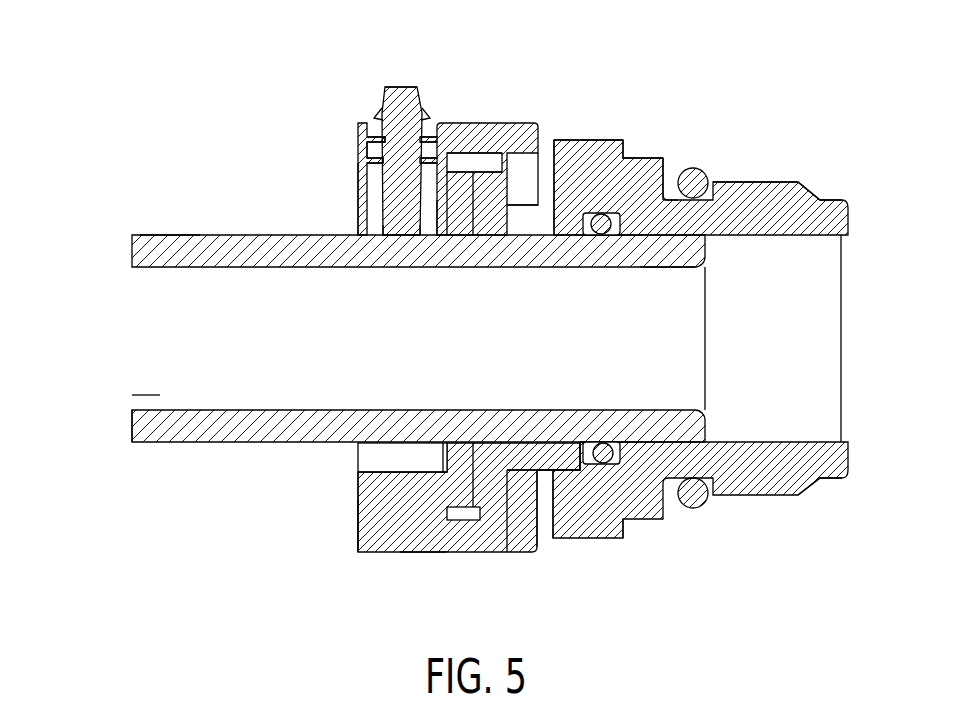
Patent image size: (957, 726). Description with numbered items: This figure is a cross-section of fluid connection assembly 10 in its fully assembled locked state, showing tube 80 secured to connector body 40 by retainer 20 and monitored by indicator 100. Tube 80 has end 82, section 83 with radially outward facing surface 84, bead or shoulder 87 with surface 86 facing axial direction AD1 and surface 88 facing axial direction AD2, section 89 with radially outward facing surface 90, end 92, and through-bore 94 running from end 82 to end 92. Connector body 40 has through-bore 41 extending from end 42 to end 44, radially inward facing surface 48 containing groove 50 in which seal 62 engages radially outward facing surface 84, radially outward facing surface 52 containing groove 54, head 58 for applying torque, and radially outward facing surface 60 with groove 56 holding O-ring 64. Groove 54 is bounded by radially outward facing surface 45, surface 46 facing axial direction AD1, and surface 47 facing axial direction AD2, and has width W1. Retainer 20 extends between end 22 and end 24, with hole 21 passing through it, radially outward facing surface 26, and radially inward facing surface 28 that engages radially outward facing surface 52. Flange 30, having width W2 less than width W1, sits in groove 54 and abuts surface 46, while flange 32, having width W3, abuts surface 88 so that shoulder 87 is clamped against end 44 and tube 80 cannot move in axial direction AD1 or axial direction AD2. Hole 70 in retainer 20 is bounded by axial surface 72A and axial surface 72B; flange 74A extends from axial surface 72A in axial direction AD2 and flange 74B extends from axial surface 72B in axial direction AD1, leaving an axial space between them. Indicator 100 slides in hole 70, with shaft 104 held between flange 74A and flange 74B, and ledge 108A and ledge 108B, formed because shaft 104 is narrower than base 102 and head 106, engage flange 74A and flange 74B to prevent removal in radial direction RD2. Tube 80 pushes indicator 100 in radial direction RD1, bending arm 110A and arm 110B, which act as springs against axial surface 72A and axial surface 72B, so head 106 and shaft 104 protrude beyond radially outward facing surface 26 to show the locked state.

The fluid connection assembly 10 is at (203, 76).
The retainer 20 is at (373, 540).
The hole 21 is at (378, 470).
The end 22 is at (557, 507).
The end 24 is at (358, 537).
The radially outward facing surface 26 is at (555, 530).
The radially inward facing surface 28 is at (408, 520).
The flange 30 is at (522, 488).
The flange 32 is at (370, 512).
The connector body 40 is at (832, 213).
The through-bore 41 is at (824, 327).
The end 42 is at (848, 458).
The end 44 is at (495, 150).
The radially outward facing surface 45 is at (560, 445).
The surface 46 is at (480, 520).
The surface 47 is at (607, 520).
The radially inward facing surface 48 is at (760, 455).
The groove 50 is at (627, 190).
The radially outward facing surface 52 is at (543, 205).
The groove 54 is at (573, 140).
The groove 56 is at (747, 192).
The head 58 is at (593, 197).
The radially outward facing surface 60 is at (800, 180).
The seal 62 is at (692, 173).
The O-ring 64 is at (733, 190).
The hole 70 is at (366, 98).
The axial surface 72A is at (438, 190).
The axial surface 72B is at (367, 134).
The flange 74A is at (447, 153).
The flange 74B is at (367, 162).
The tube 80 is at (222, 235).
The end 82 is at (712, 385).
The section 83 is at (659, 455).
The radially outward facing surface 84 is at (604, 245).
The surface 86 is at (463, 212).
The shoulder 87 is at (455, 225).
The surface 88 is at (432, 215).
The section 89 is at (253, 467).
The radially outward facing surface 90 is at (165, 235).
The end 92 is at (132, 427).
The through-bore 94 is at (143, 394).
The indicator 100 is at (390, 236).
The base 102 is at (398, 232).
The shaft 104 is at (385, 150).
The head 106 is at (398, 88).
The ledge 108A is at (436, 123).
The ledge 108B is at (380, 117).
The arm 110A is at (425, 232).
The arm 110B is at (370, 217).
The width W1 is at (506, 195).
The width W2 is at (511, 177).
The width W3 is at (446, 495).
The radial direction RD1 is at (98, 338).
The radial direction RD2 is at (80, 285).
The axial direction AD1 is at (188, 525).
The axial direction AD2 is at (150, 545).